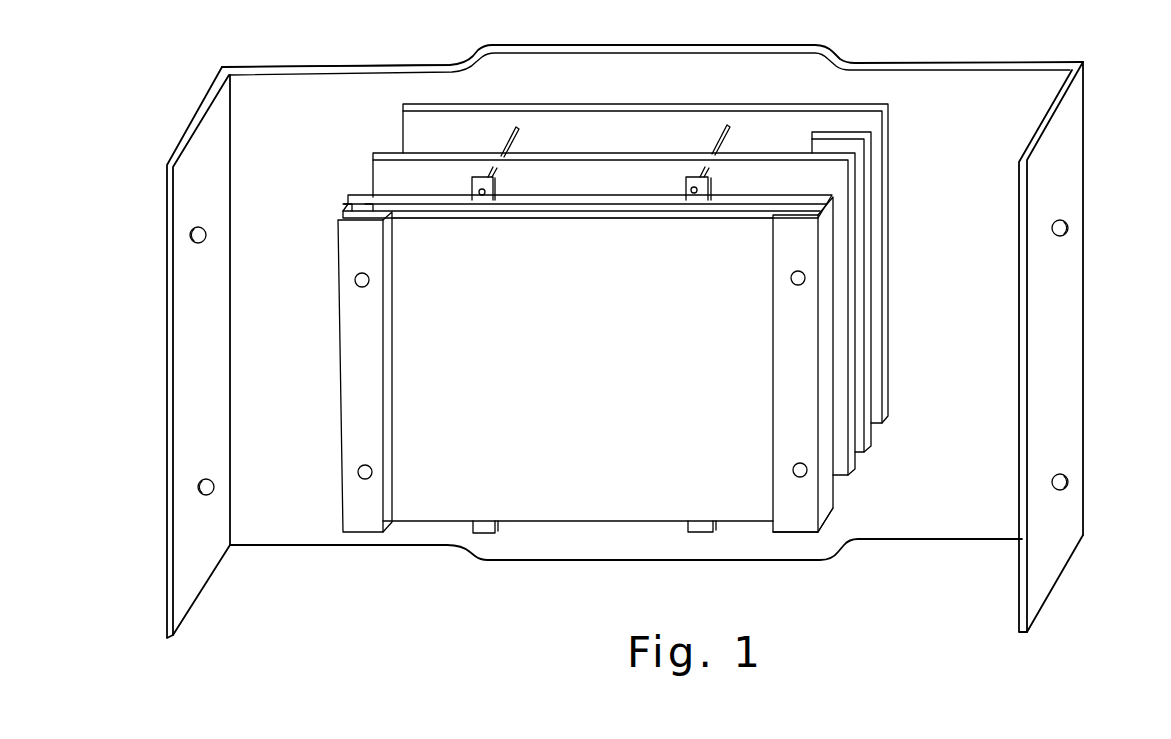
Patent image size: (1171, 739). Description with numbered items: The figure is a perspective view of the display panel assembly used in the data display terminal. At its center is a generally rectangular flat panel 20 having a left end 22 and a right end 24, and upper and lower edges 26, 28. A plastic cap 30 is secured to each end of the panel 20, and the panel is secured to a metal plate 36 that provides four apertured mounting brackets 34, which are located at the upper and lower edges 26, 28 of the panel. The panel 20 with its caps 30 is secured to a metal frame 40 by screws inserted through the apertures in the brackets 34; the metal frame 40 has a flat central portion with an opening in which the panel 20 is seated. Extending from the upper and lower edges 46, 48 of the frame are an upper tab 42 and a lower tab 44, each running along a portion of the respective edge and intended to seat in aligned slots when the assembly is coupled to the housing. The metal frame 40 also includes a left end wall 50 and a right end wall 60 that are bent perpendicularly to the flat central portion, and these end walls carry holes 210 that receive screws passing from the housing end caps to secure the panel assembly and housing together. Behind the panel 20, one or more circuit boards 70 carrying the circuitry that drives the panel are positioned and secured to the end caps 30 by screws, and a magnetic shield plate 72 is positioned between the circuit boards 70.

The flat panel 20 is at (590, 357).
The left end 22 is at (356, 207).
The right end 24 is at (838, 206).
The upper edge 26 is at (373, 195).
The lower edge 28 is at (833, 510).
The plastic cap 30 is at (352, 345).
The apertured mounting bracket 34 is at (488, 190).
The metal plate 36 is at (352, 207).
The metal frame 40 is at (1016, 62).
The upper tab 42 is at (571, 48).
The lower tab 44 is at (606, 561).
The upper edge of frame 46 is at (298, 66).
The lower edge of frame 48 is at (303, 546).
The left end wall 50 is at (203, 103).
The right end wall 60 is at (1062, 100).
The circuit board 70 is at (783, 155).
The magnetic shield plate 72 is at (847, 133).
The hole 210 is at (194, 235).